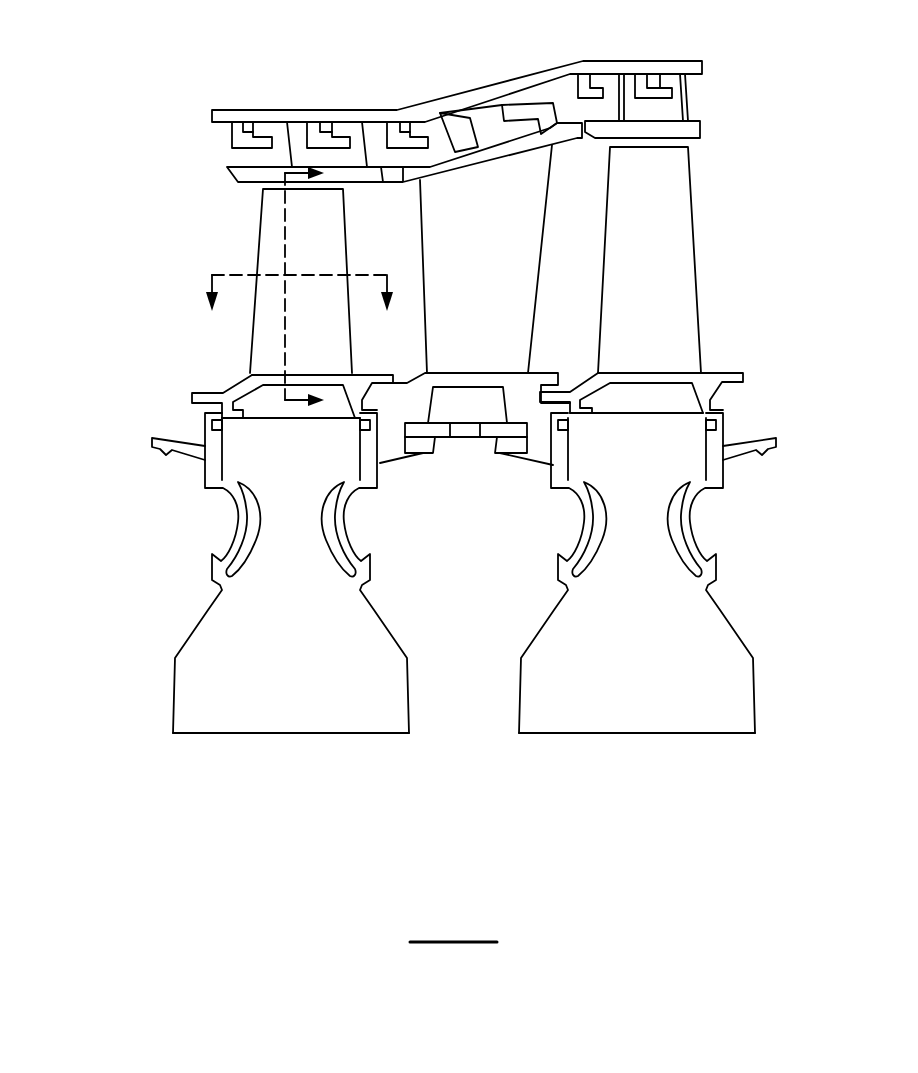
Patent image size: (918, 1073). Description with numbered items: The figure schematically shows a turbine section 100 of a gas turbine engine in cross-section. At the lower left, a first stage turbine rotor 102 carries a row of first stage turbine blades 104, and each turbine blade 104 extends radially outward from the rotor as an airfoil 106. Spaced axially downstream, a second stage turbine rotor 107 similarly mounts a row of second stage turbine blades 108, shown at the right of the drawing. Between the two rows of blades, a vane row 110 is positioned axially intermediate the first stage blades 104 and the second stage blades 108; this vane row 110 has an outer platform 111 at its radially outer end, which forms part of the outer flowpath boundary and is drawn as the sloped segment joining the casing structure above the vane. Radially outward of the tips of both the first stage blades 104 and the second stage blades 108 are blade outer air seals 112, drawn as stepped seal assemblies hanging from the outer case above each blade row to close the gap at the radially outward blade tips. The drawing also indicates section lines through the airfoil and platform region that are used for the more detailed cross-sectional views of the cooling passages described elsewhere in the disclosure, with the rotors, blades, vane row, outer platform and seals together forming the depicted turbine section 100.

The turbine section 100 is at (133, 229).
The first stage turbine rotor 102 is at (272, 712).
The first stage turbine blade 104 is at (265, 333).
The airfoil 106 is at (272, 240).
The second stage turbine rotor 107 is at (693, 612).
The second stage turbine blade 108 is at (648, 284).
The vane row 110 is at (477, 202).
The outer platform 111 is at (477, 155).
The blade outer air seal 112 is at (328, 172).